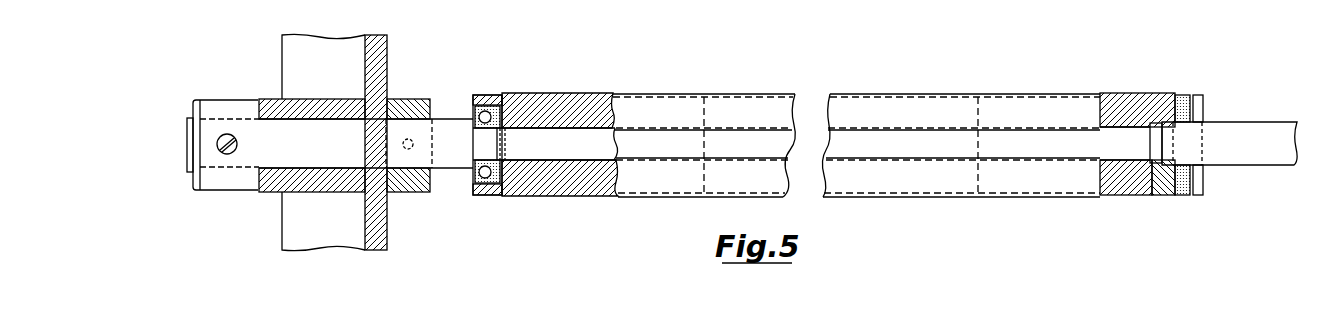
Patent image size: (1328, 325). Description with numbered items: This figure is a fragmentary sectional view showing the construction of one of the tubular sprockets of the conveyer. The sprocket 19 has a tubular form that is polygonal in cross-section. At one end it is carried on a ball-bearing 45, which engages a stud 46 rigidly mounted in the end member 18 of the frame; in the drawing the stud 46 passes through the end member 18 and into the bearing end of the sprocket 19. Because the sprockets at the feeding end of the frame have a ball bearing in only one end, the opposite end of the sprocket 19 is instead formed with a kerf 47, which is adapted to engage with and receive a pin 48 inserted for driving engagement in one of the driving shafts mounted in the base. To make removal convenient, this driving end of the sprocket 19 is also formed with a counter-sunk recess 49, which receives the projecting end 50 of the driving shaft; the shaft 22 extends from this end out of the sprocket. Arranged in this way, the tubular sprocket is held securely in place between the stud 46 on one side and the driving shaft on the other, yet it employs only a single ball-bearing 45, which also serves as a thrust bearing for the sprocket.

The end member 18 is at (334, 142).
The sprocket 19 is at (565, 107).
The shaft 22 is at (1262, 127).
The ball-bearing 45 is at (474, 111).
The stud 46 is at (346, 145).
The kerf 47 is at (1203, 104).
The pin 48 is at (1188, 188).
The counter-sunk recess 49 is at (1146, 196).
The projecting end 50 is at (1160, 144).